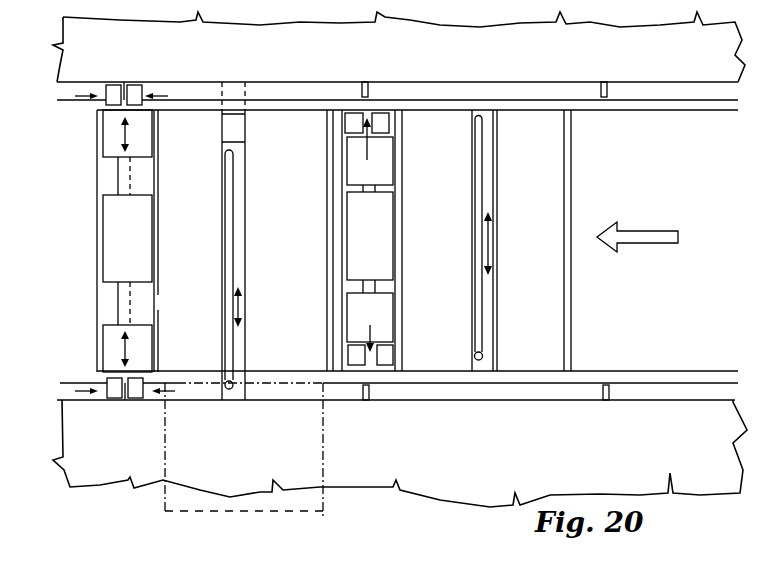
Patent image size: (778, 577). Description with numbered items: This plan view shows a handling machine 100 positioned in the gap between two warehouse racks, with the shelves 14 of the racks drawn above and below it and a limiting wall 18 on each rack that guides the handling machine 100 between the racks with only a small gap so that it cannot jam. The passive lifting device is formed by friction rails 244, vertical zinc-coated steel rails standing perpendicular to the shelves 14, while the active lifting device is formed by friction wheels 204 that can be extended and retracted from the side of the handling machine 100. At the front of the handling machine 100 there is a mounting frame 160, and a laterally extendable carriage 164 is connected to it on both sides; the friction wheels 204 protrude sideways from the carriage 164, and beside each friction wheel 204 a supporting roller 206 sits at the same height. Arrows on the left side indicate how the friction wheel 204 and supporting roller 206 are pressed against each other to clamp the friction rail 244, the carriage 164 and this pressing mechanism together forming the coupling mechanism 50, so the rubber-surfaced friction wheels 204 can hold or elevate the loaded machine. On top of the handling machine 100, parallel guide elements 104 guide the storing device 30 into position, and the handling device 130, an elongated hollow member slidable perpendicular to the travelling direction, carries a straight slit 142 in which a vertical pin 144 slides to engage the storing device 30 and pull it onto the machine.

The shelf 14 is at (323, 62).
The limiting wall 18 is at (397, 243).
The storing device 30 is at (323, 452).
The coupling mechanism 50 is at (86, 109).
The handling machine 100 is at (298, 250).
The guide element 104 is at (158, 160).
The handling device 130 is at (260, 290).
The slit 142 is at (228, 339).
The pin 144 is at (230, 382).
The mounting frame 160 is at (145, 236).
The carriage 164 is at (108, 140).
The friction wheel 204 is at (112, 85).
The supporting roller 206 is at (137, 85).
The friction rail 244 is at (366, 82).